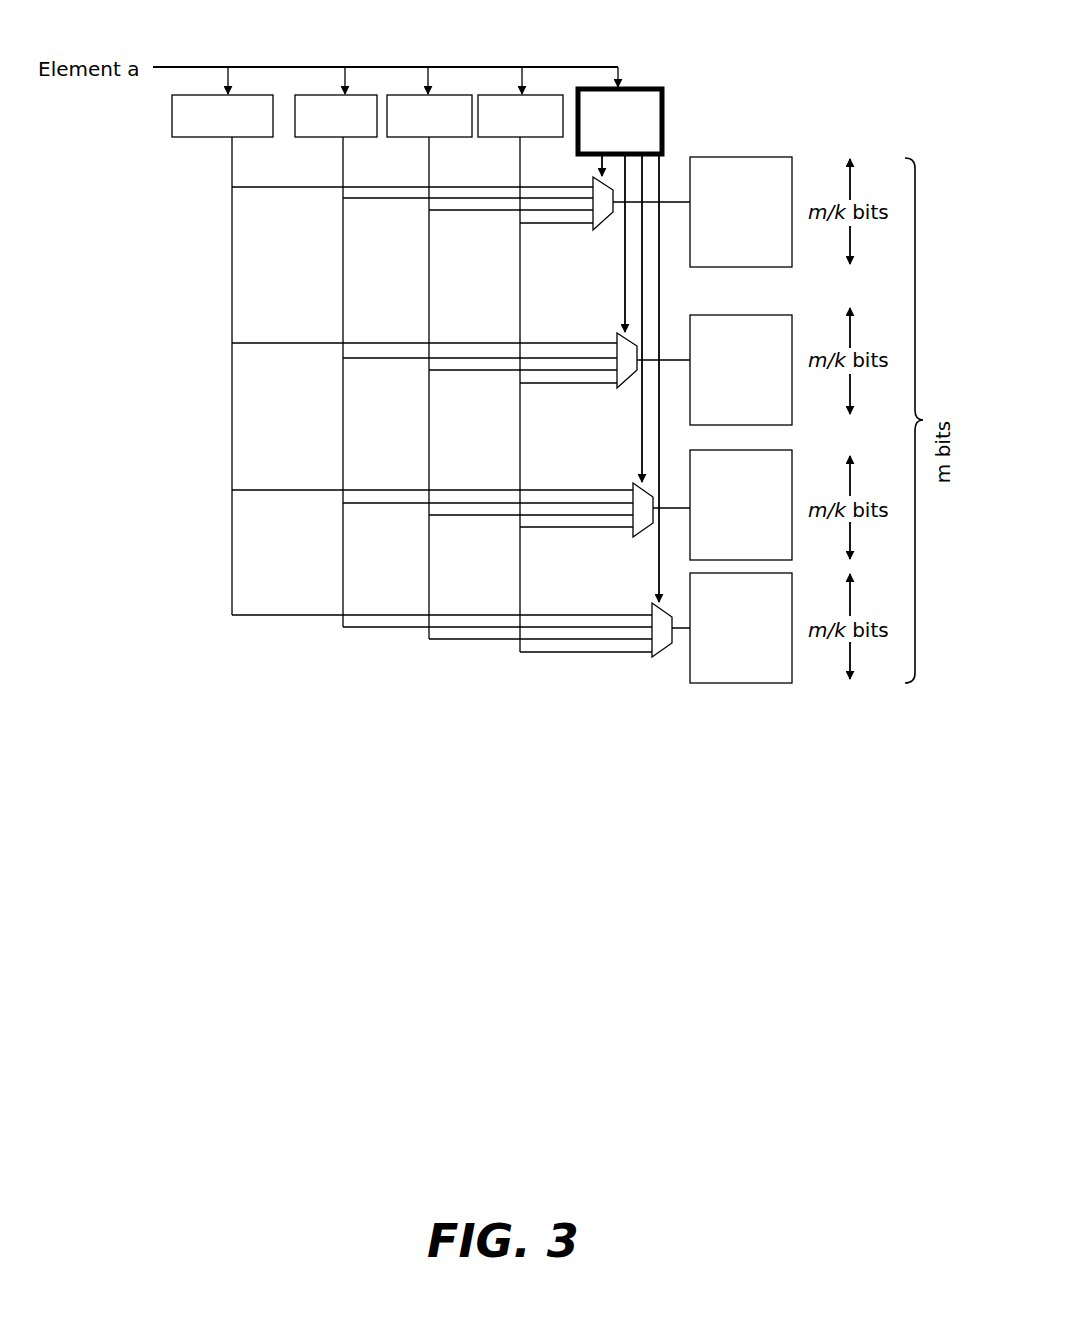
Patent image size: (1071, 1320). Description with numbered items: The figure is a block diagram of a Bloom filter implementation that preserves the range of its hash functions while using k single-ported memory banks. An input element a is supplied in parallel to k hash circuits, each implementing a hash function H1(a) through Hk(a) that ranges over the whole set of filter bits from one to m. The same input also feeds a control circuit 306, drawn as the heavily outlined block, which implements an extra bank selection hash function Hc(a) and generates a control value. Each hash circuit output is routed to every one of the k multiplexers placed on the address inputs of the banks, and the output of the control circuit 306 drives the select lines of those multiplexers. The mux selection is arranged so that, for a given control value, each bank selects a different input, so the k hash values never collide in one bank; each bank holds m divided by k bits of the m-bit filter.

The control circuit 306 is at (652, 88).